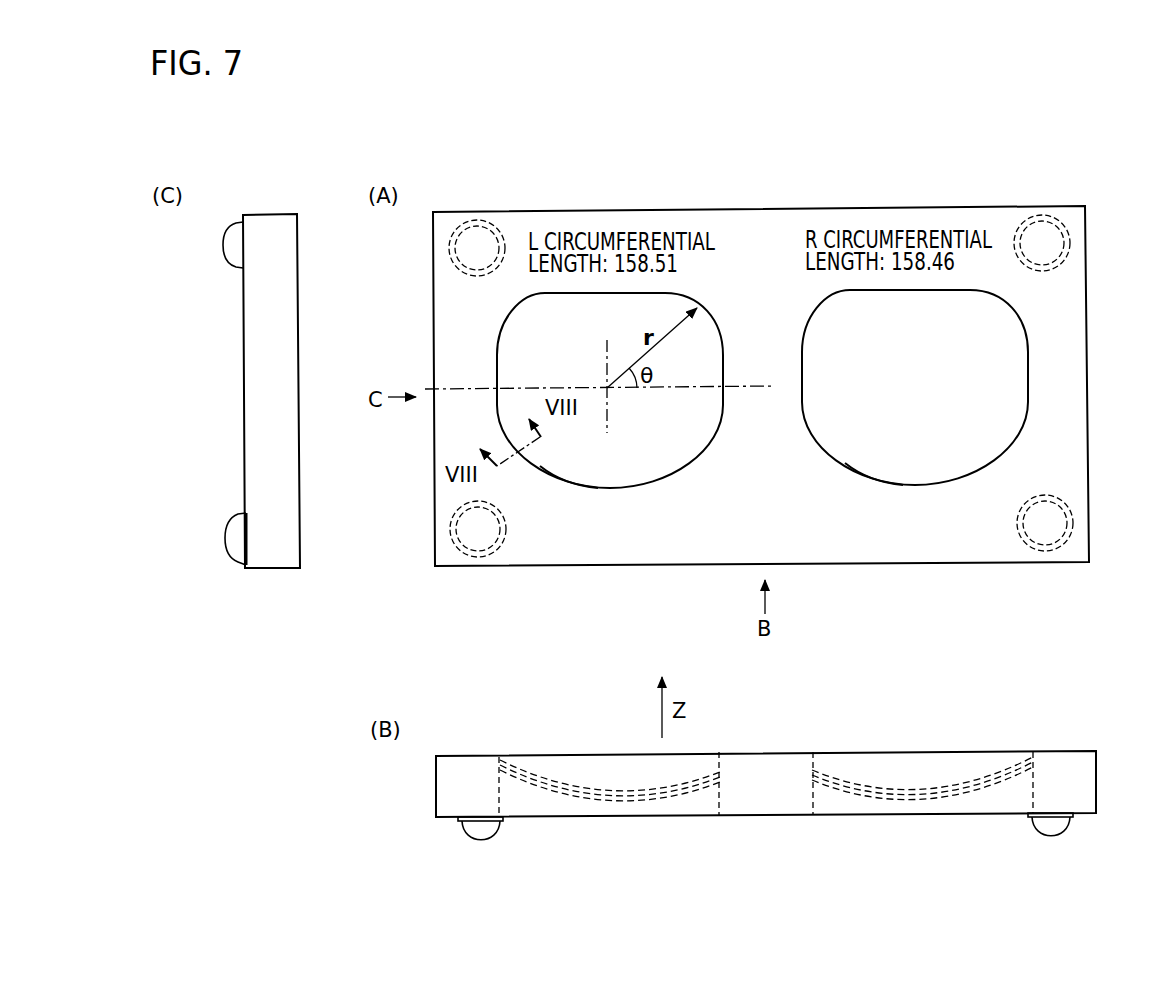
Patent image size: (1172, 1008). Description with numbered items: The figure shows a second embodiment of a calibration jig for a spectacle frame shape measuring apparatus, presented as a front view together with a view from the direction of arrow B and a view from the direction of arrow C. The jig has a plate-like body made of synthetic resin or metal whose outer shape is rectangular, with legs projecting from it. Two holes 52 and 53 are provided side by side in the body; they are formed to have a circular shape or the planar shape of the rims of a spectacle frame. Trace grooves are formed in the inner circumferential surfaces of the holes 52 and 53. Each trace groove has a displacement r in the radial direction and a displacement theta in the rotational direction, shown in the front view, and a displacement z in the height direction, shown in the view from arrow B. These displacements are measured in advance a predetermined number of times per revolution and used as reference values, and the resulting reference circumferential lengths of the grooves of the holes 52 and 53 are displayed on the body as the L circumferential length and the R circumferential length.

The hole 52 is at (628, 468).
The hole 53 is at (920, 465).